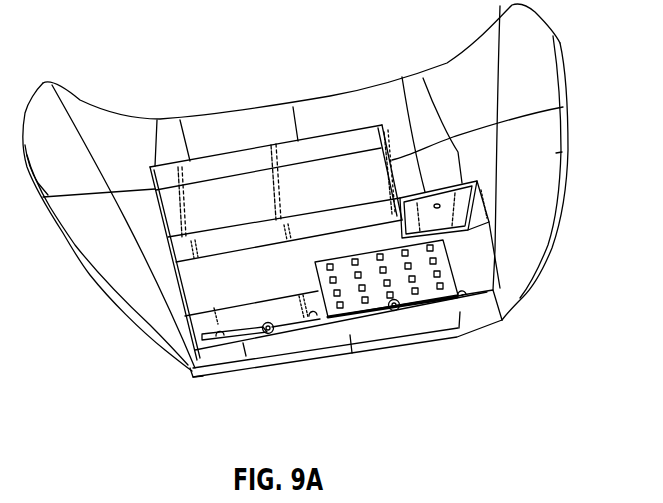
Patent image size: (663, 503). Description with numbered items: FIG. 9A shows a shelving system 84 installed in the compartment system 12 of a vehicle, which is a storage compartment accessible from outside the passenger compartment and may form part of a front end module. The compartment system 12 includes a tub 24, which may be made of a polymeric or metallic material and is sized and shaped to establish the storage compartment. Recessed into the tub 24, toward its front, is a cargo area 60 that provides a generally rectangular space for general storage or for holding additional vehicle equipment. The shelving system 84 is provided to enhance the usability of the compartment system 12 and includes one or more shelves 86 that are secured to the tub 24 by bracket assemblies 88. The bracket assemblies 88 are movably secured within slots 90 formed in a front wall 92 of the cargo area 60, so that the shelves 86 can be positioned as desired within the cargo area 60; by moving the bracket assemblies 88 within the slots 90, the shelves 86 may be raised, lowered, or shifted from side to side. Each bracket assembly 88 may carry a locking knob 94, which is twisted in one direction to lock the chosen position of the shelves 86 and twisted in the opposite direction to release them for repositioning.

The compartment system 12 is at (334, 88).
The tub 24 is at (470, 66).
The cargo area 60 is at (202, 279).
The shelving system 84 is at (459, 279).
The shelves 86 is at (373, 284).
The bracket assemblies 88 is at (265, 337).
The slots 90 is at (212, 341).
The front wall 92 is at (315, 322).
The locking knob 94 is at (269, 322).